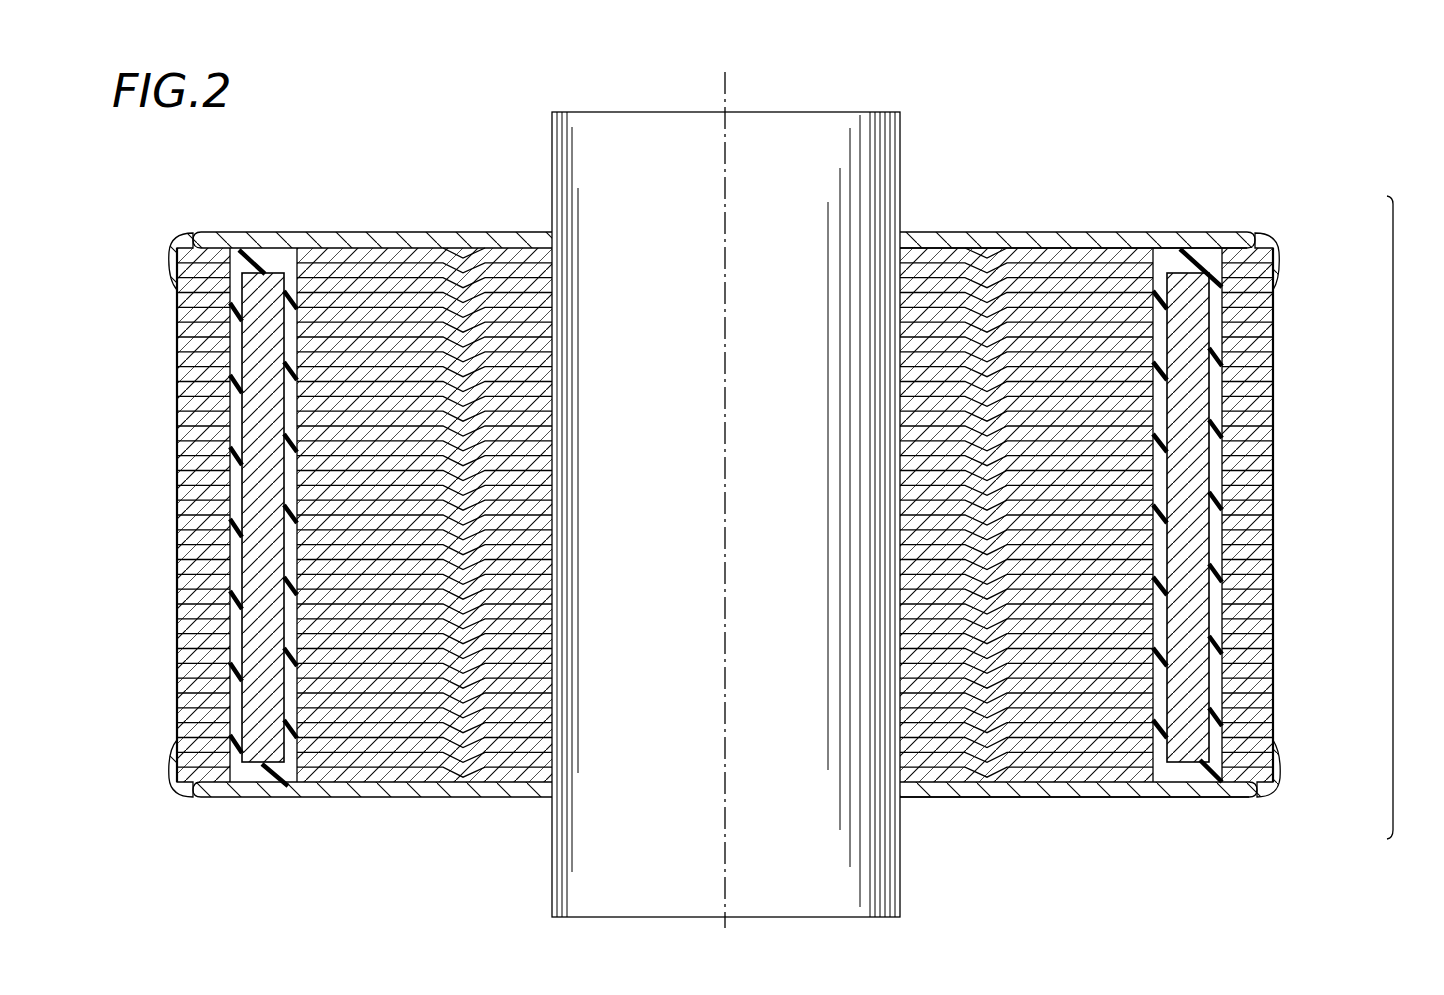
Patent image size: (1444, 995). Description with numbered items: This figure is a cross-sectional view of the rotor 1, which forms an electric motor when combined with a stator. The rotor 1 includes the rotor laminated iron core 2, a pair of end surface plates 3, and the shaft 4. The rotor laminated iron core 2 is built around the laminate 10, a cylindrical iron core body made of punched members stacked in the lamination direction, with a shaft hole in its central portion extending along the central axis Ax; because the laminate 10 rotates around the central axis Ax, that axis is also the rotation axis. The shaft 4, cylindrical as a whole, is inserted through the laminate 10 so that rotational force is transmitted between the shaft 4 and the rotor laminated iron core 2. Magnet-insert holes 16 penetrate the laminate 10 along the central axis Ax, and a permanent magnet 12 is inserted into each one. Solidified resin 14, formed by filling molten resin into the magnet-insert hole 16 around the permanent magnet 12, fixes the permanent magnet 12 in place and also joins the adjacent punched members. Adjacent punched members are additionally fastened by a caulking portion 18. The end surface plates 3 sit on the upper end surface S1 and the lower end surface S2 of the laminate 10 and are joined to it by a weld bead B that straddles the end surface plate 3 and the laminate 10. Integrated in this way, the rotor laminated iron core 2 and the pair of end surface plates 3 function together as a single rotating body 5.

The rotor 1 is at (1258, 138).
The rotor laminated iron core 2 is at (1338, 465).
The end surface plate 3 is at (1230, 235).
The shaft 4 is at (903, 148).
The rotating body 5 is at (1393, 517).
The laminate 10 is at (1292, 588).
The permanent magnet 12 is at (244, 376).
The solidified resin 14 is at (253, 773).
The magnet-insert hole 16 is at (283, 252).
The caulking portion 18 is at (466, 246).
The weld bead B is at (168, 256).
The upper end surface S1 is at (1032, 244).
The lower end surface S2 is at (1042, 802).
The central axis Ax is at (727, 92).